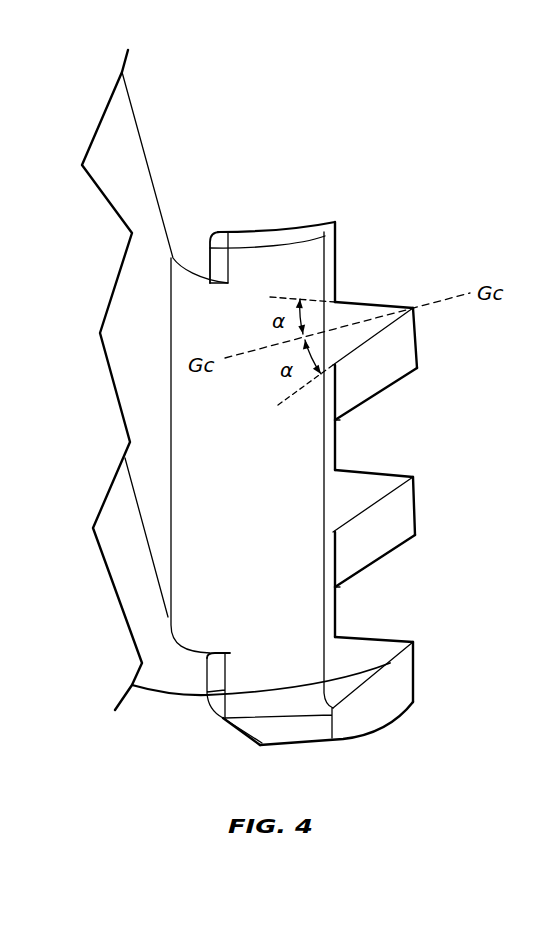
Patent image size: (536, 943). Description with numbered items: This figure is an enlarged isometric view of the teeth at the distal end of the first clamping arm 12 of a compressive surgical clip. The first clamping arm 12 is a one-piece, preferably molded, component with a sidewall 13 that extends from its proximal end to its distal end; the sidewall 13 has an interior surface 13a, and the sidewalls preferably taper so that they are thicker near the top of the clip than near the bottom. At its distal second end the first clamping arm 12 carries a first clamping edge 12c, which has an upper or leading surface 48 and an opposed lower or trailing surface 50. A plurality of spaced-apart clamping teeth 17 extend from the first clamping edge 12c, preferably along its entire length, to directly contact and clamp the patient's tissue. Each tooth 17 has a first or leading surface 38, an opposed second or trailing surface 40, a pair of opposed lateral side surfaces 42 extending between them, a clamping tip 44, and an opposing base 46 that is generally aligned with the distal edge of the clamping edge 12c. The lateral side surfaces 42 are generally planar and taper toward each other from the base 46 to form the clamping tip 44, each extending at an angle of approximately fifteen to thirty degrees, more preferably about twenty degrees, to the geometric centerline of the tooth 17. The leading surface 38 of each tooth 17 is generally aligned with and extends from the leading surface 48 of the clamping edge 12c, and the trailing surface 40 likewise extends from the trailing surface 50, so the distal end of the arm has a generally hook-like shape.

The first clamping arm 12 is at (405, 157).
The sidewall 13 is at (135, 148).
The interior surface 13a is at (143, 177).
The first clamping edge 12c is at (260, 238).
The upper surface 48 is at (297, 257).
The base 46 is at (325, 320).
The clamping teeth 17 is at (392, 308).
The first surface 38 is at (382, 296).
The clamping tip 44 is at (417, 337).
The second surface 40 is at (383, 400).
The lateral side surfaces 42 is at (388, 302).
The lower surface 50 is at (298, 753).